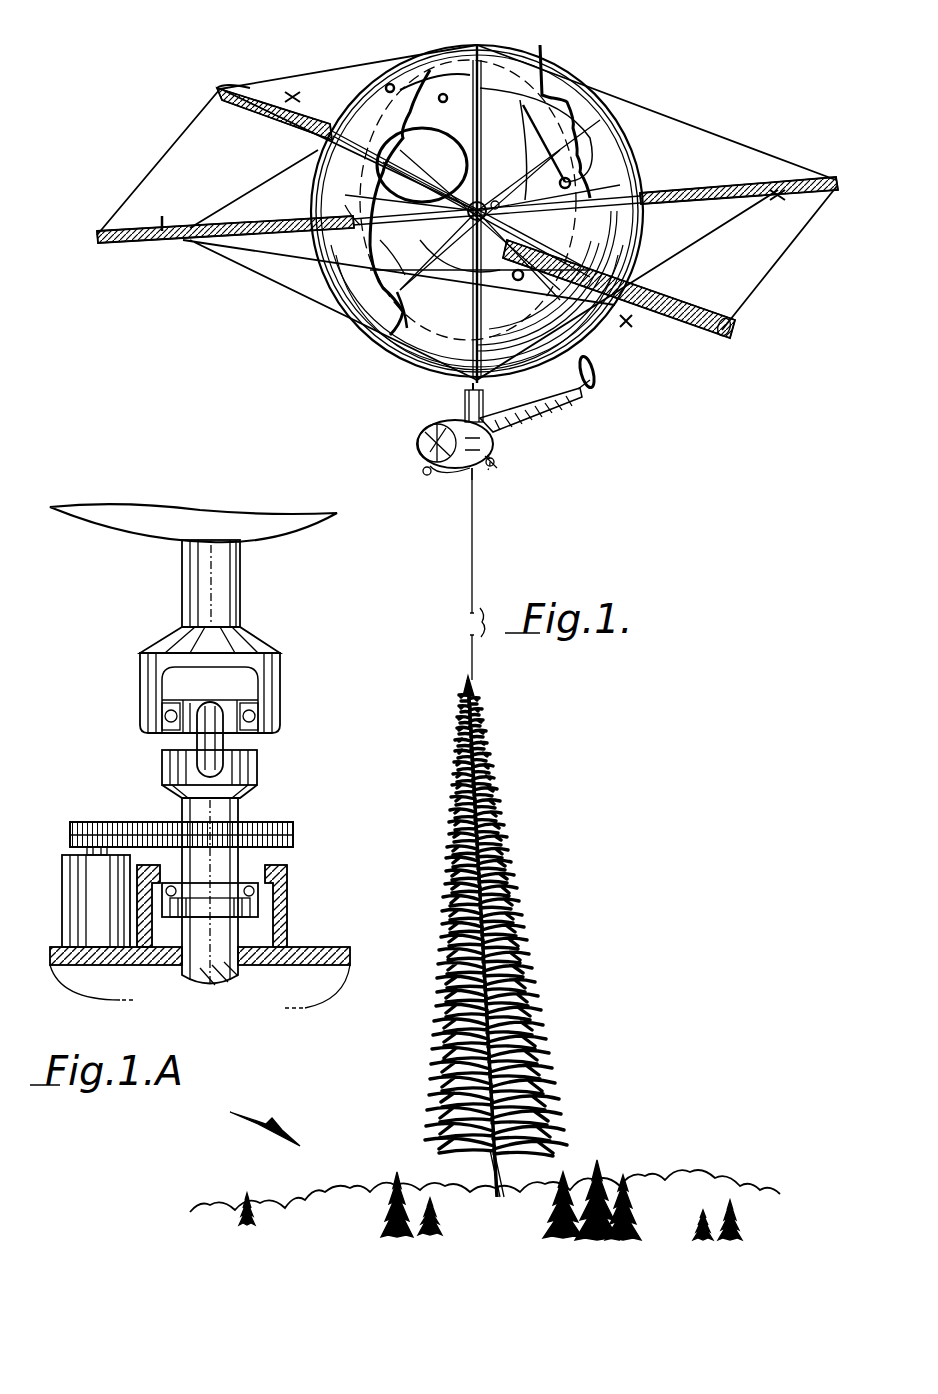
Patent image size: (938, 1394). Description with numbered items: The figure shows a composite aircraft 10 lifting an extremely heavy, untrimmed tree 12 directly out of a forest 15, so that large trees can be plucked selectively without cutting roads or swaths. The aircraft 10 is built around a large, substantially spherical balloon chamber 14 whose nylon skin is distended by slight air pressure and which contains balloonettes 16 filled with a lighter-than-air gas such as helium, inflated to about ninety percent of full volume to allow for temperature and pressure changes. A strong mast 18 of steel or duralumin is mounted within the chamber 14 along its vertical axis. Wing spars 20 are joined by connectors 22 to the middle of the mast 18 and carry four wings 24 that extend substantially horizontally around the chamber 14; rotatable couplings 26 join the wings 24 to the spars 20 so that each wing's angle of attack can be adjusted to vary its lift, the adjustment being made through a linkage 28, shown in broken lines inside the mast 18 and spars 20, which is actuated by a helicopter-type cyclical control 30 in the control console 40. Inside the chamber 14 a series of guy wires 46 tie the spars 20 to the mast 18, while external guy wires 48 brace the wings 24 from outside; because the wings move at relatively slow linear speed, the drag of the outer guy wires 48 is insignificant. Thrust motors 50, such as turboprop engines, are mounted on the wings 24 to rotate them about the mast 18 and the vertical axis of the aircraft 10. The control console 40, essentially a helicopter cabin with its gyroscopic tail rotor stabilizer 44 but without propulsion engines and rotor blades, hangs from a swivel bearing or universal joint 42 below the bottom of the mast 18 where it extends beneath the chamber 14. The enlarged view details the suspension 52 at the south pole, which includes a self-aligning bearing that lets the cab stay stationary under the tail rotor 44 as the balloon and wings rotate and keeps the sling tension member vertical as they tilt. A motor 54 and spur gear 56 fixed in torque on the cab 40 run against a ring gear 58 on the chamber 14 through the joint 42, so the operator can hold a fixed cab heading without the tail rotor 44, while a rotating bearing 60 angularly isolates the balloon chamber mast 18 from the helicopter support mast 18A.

In FIG. 1, the composite aircraft 10 is at (642, 96).
In FIG. 1, the tree 12 is at (490, 842).
In FIG. 1, the balloon chamber 14 is at (392, 366).
In FIG. 1A, the balloon chamber 14 is at (125, 535).
In FIG. 1, the forest 15 is at (660, 1170).
In FIG. 1, the balloonettes 16 is at (520, 88).
In FIG. 1, the mast 18 is at (470, 382).
In FIG. 1A, the mast 18 is at (185, 590).
In FIG. 1, the helicopter support mast 18A is at (490, 434).
In FIG. 1A, the helicopter support mast 18A is at (190, 950).
In FIG. 1, the wing spars 20 is at (603, 210).
In FIG. 1, the connectors 22 is at (485, 210).
In FIG. 1, the wings 24 is at (276, 90).
In FIG. 1, the rotatable couplings 26 is at (345, 205).
In FIG. 1, the linkage 28 is at (500, 368).
In FIG. 1, the cyclical control 30 is at (495, 457).
In FIG. 1, the control console 40 is at (423, 465).
In FIG. 1A, the control console 40 is at (290, 1008).
In FIG. 1, the swivel bearing 42 is at (465, 400).
In FIG. 1A, the swivel bearing 42 is at (160, 718).
In FIG. 1, the tail rotor stabilizer 44 is at (590, 378).
In FIG. 1, the guy wires 46 is at (403, 257).
In FIG. 1, the guy wires 48 is at (175, 152).
In FIG. 1, the thrust motors 50 is at (292, 96).
In FIG. 1A, the suspension 52 is at (150, 751).
In FIG. 1A, the motor 54 is at (75, 884).
In FIG. 1A, the spur gear 56 is at (72, 834).
In FIG. 1A, the ring gear 58 is at (258, 832).
In FIG. 1A, the rotating bearing 60 is at (260, 900).